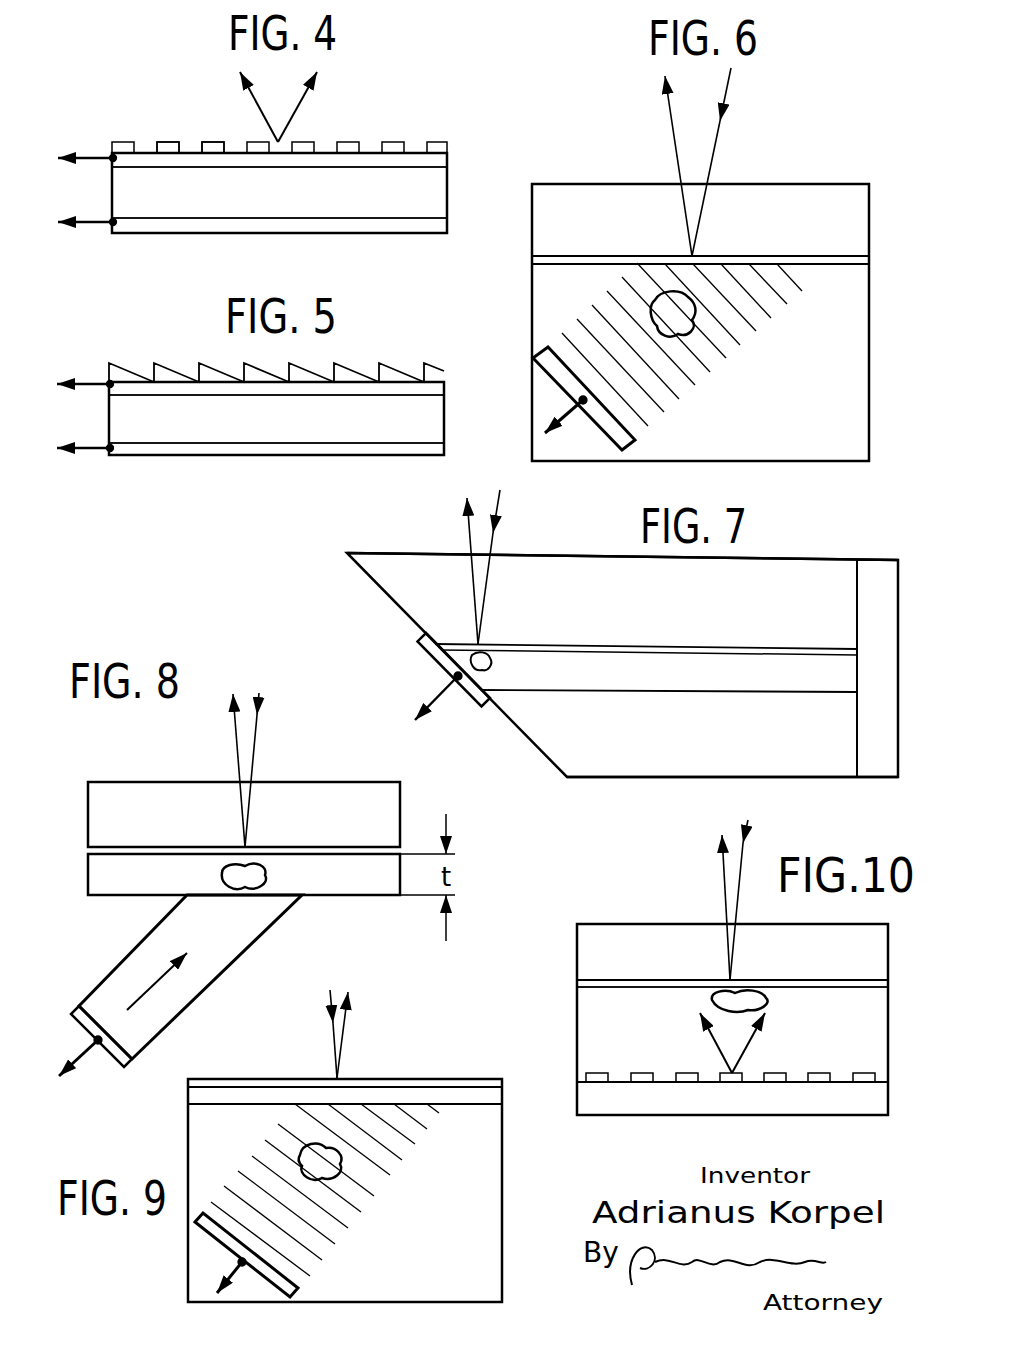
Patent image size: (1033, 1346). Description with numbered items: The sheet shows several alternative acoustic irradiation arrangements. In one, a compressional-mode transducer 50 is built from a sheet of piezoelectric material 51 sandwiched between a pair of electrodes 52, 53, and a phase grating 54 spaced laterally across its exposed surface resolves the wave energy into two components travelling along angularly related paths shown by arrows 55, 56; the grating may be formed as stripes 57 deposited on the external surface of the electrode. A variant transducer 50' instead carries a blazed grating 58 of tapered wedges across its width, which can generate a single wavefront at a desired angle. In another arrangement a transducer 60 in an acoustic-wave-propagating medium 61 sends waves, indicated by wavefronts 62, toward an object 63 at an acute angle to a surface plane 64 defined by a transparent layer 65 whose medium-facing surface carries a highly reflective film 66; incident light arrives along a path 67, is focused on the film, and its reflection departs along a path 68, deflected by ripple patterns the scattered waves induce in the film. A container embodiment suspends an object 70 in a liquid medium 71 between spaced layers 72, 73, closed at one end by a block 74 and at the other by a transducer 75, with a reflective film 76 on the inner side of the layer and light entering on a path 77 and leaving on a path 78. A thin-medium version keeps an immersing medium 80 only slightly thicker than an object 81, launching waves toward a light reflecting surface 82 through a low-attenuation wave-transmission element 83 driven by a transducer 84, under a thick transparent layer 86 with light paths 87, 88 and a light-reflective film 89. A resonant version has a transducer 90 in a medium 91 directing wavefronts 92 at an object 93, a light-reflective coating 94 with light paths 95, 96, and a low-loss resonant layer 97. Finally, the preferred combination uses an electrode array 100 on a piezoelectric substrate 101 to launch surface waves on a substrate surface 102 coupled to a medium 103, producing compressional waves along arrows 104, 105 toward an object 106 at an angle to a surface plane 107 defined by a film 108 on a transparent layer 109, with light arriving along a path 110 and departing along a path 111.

In FIG. 4, the transducer 50 is at (279, 212).
In FIG. 5, the transducer 50' is at (276, 440).
In FIG. 4, the sheet of piezoelectric material 51 is at (215, 197).
In FIG. 5, the sheet of piezoelectric material 51 is at (258, 422).
In FIG. 4, the electrode 52 is at (368, 163).
In FIG. 5, the electrode 52 is at (190, 383).
In FIG. 4, the electrode 53 is at (160, 222).
In FIG. 5, the electrode 53 is at (132, 452).
In FIG. 4, the phase grating 54 is at (342, 137).
In FIG. 4, the arrow 55 is at (303, 108).
In FIG. 4, the arrow 56 is at (247, 110).
In FIG. 4, the grating elements 57 is at (215, 143).
In FIG. 5, the blazed grating 58 is at (348, 356).
In FIG. 6, the transducer 60 is at (607, 423).
In FIG. 6, the acoustic-wave-propagating medium 61 is at (850, 365).
In FIG. 6, the wavefronts 62 is at (675, 384).
In FIG. 6, the object 63 is at (692, 337).
In FIG. 6, the surface plane 64 is at (818, 256).
In FIG. 6, the layer 65 is at (861, 223).
In FIG. 6, the film 66 is at (862, 264).
In FIG. 6, the path 67 is at (716, 155).
In FIG. 6, the path 68 is at (673, 143).
In FIG. 7, the object 70 is at (490, 663).
In FIG. 7, the liquid medium 71 is at (810, 672).
In FIG. 7, the layer 72 is at (808, 555).
In FIG. 7, the layer 73 is at (597, 753).
In FIG. 7, the block 74 is at (880, 760).
In FIG. 7, the transducer 75 is at (472, 703).
In FIG. 7, the film 76 is at (622, 645).
In FIG. 7, the path 77 is at (497, 518).
In FIG. 7, the path 78 is at (465, 527).
In FIG. 8, the immersing medium 80 is at (369, 879).
In FIG. 8, the object 81 is at (262, 874).
In FIG. 8, the light reflecting surface 82 is at (132, 855).
In FIG. 8, the wave-transmission element 83 is at (211, 944).
In FIG. 8, the transducer 84 is at (78, 1018).
In FIG. 8, the transparent layer 86 is at (340, 811).
In FIG. 8, the path 87 is at (251, 753).
In FIG. 8, the path 88 is at (242, 749).
In FIG. 8, the light-reflective film 89 is at (364, 849).
In FIG. 9, the transducer 90 is at (215, 1233).
In FIG. 9, the wave-propagating medium 91 is at (478, 1150).
In FIG. 9, the wavefronts 92 is at (325, 1243).
In FIG. 9, the object 93 is at (335, 1168).
In FIG. 9, the light-reflective coating 94 is at (248, 1082).
In FIG. 9, the path 95 is at (327, 1030).
In FIG. 9, the path 96 is at (347, 1028).
In FIG. 9, the layer 97 is at (410, 1100).
In FIG. 10, the electrode array 100 is at (783, 1070).
In FIG. 10, the piezoelectric substrate 101 is at (590, 1093).
In FIG. 10, the substrate surface 102 is at (845, 1077).
In FIG. 10, the wave-propagating medium 103 is at (593, 1020).
In FIG. 10, the arrow 104 is at (753, 1040).
In FIG. 10, the arrow 105 is at (713, 1047).
In FIG. 10, the object 106 is at (713, 998).
In FIG. 10, the surface plane 107 is at (617, 975).
In FIG. 10, the film 108 is at (597, 983).
In FIG. 10, the transparent layer 109 is at (622, 942).
In FIG. 10, the path 110 is at (745, 897).
In FIG. 10, the path 111 is at (722, 895).